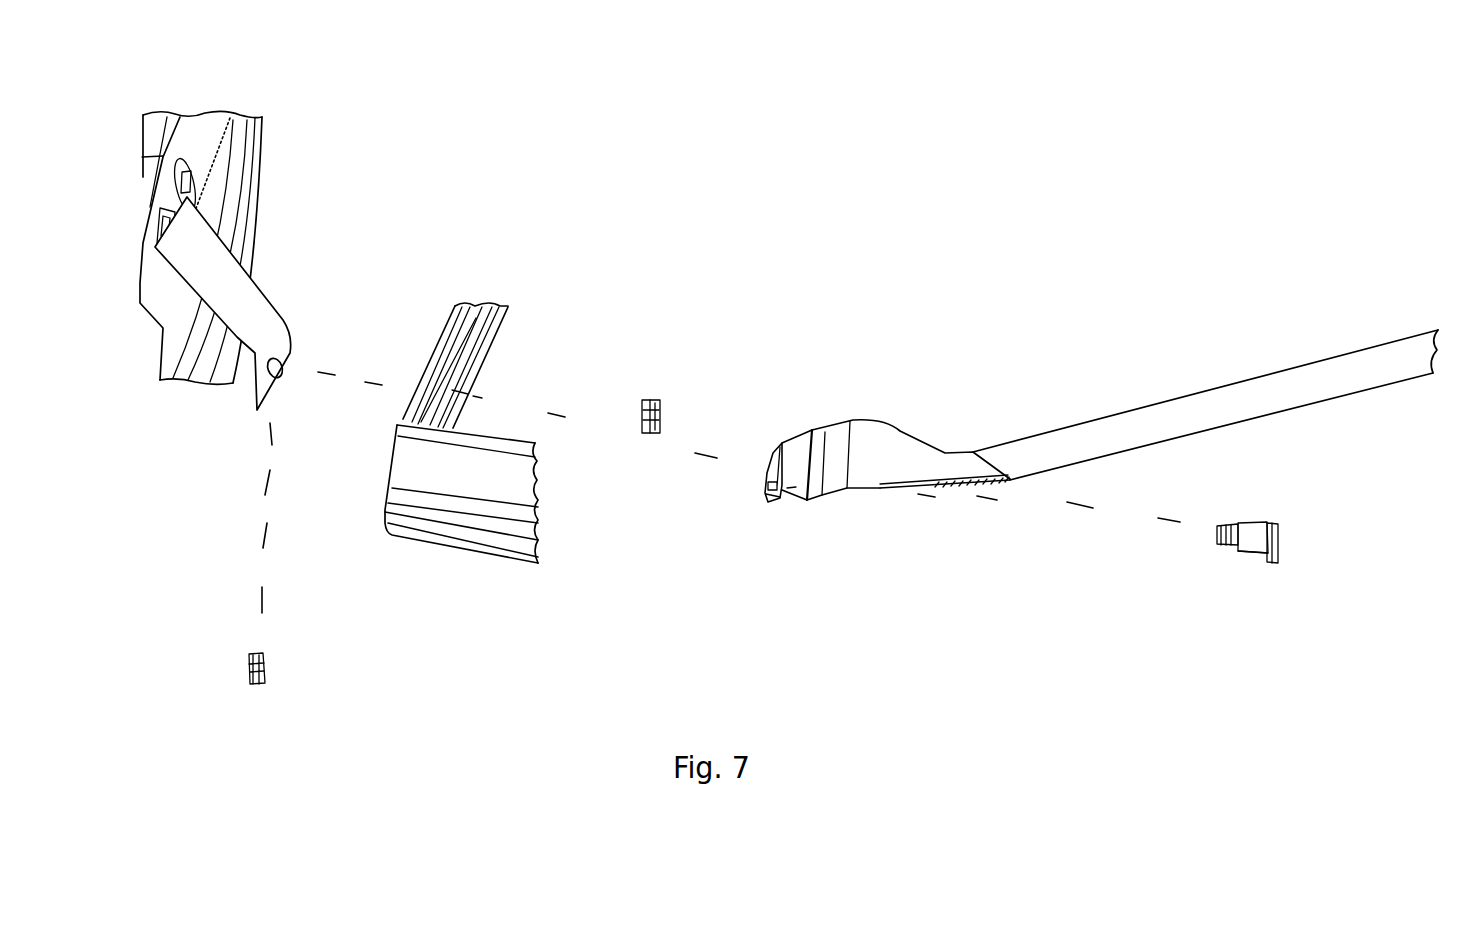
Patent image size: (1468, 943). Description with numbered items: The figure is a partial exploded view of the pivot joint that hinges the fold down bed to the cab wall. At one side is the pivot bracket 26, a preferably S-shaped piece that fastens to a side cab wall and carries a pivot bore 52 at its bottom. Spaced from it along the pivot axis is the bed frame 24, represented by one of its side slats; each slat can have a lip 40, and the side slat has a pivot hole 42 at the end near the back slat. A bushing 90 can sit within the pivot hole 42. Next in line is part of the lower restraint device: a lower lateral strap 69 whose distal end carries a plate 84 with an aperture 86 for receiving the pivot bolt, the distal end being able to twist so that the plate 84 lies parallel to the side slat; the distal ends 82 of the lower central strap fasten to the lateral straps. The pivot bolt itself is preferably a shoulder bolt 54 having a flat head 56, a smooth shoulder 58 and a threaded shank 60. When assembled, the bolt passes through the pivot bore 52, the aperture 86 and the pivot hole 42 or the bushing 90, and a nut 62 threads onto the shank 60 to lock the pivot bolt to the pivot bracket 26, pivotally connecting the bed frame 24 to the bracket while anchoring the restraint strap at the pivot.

The pivot bracket 26 is at (242, 293).
The pivot bore 52 is at (292, 344).
The nut 62 is at (255, 685).
The lip 40 is at (455, 306).
The pivot hole 42 is at (437, 392).
The bed frame 24 is at (471, 516).
The bushing 90 is at (650, 398).
The plate 84 is at (782, 443).
The distal ends of the lower central strap 82 is at (863, 440).
The aperture 86 is at (776, 491).
The lower lateral strap 69 is at (1200, 407).
The threaded shank 60 is at (1229, 527).
The smooth shoulder 58 is at (1256, 535).
The shoulder bolt 54 is at (1250, 546).
The flat head 56 is at (1280, 536).